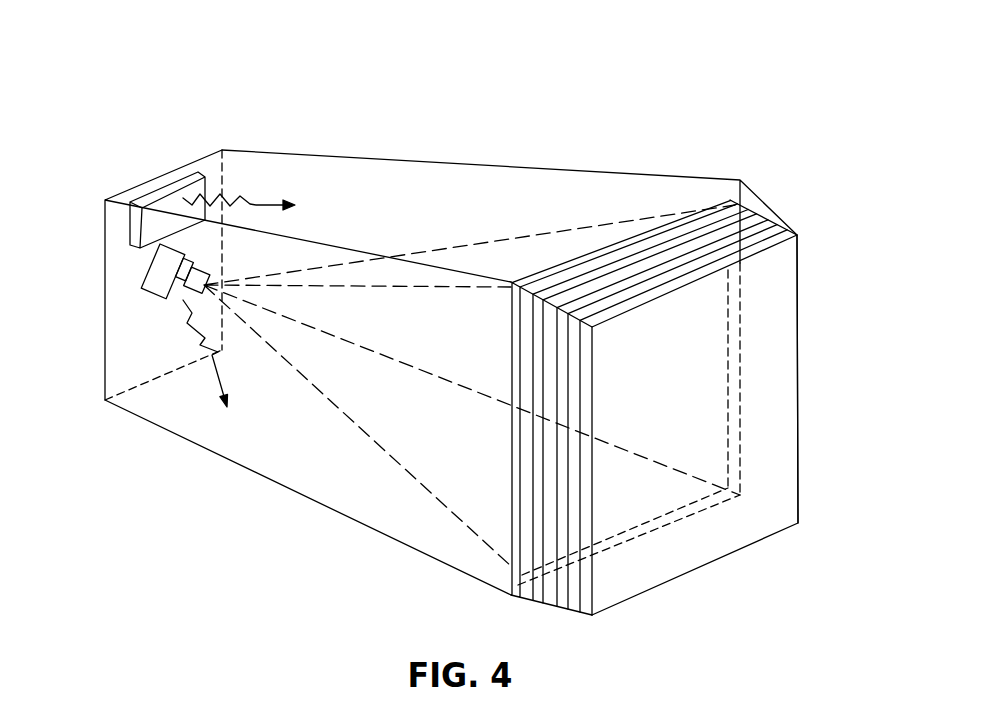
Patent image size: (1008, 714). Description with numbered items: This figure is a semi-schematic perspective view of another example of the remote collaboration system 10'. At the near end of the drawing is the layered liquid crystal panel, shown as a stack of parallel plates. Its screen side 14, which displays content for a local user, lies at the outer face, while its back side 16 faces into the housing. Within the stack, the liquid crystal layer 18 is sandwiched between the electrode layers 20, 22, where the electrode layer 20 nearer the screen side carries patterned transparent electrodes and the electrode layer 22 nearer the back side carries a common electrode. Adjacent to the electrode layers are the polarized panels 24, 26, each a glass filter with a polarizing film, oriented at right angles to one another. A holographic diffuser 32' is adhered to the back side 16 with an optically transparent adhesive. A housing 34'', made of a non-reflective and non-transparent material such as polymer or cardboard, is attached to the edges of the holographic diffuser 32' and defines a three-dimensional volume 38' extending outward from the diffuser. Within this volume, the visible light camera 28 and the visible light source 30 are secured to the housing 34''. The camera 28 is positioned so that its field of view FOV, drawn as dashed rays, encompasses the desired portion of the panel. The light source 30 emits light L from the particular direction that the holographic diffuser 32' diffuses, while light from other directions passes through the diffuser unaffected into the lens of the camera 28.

The remote collaboration system 10' is at (451, 332).
The screen side 14 is at (773, 303).
The back side 16 is at (590, 492).
The liquid crystal layer 18 is at (707, 250).
The electrode layer 20 is at (578, 320).
The electrode layer 22 is at (667, 257).
The polarized panel 24 is at (583, 362).
The polarized panel 26 is at (610, 272).
The visible light camera 28 is at (162, 274).
The visible light source 30 is at (175, 207).
The holographic diffuser 32' is at (640, 363).
The housing 34'' is at (349, 132).
The three-dimensional volume 38' is at (231, 365).
The light L is at (258, 204).
The field of view FOV is at (442, 250).